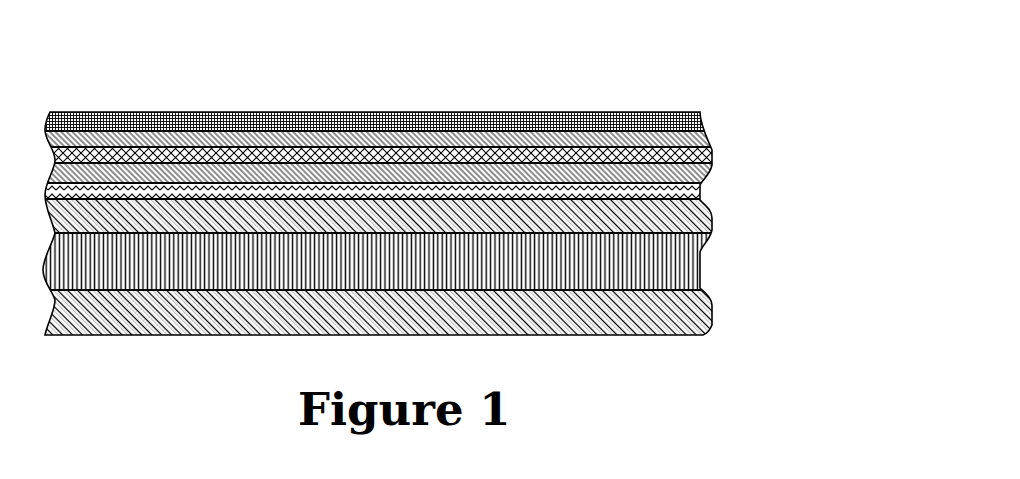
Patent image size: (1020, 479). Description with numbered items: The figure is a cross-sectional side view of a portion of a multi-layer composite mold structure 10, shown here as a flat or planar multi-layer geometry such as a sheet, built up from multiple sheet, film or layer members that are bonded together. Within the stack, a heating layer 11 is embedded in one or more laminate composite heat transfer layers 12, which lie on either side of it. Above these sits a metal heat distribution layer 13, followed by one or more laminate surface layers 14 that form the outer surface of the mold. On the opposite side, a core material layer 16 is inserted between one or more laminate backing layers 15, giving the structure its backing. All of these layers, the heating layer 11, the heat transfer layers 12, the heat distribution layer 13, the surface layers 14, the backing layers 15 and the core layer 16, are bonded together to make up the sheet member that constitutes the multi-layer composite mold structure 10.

The multi-layer composite mold structure 10 is at (428, 77).
The heating layer 11 is at (380, 191).
The laminate composite heat transfer layer 12 is at (380, 157).
The metal heat distribution layer 13 is at (380, 155).
The laminate surface layer 14 is at (380, 121).
The laminate backing layer 15 is at (380, 267).
The core material layer 16 is at (380, 261).